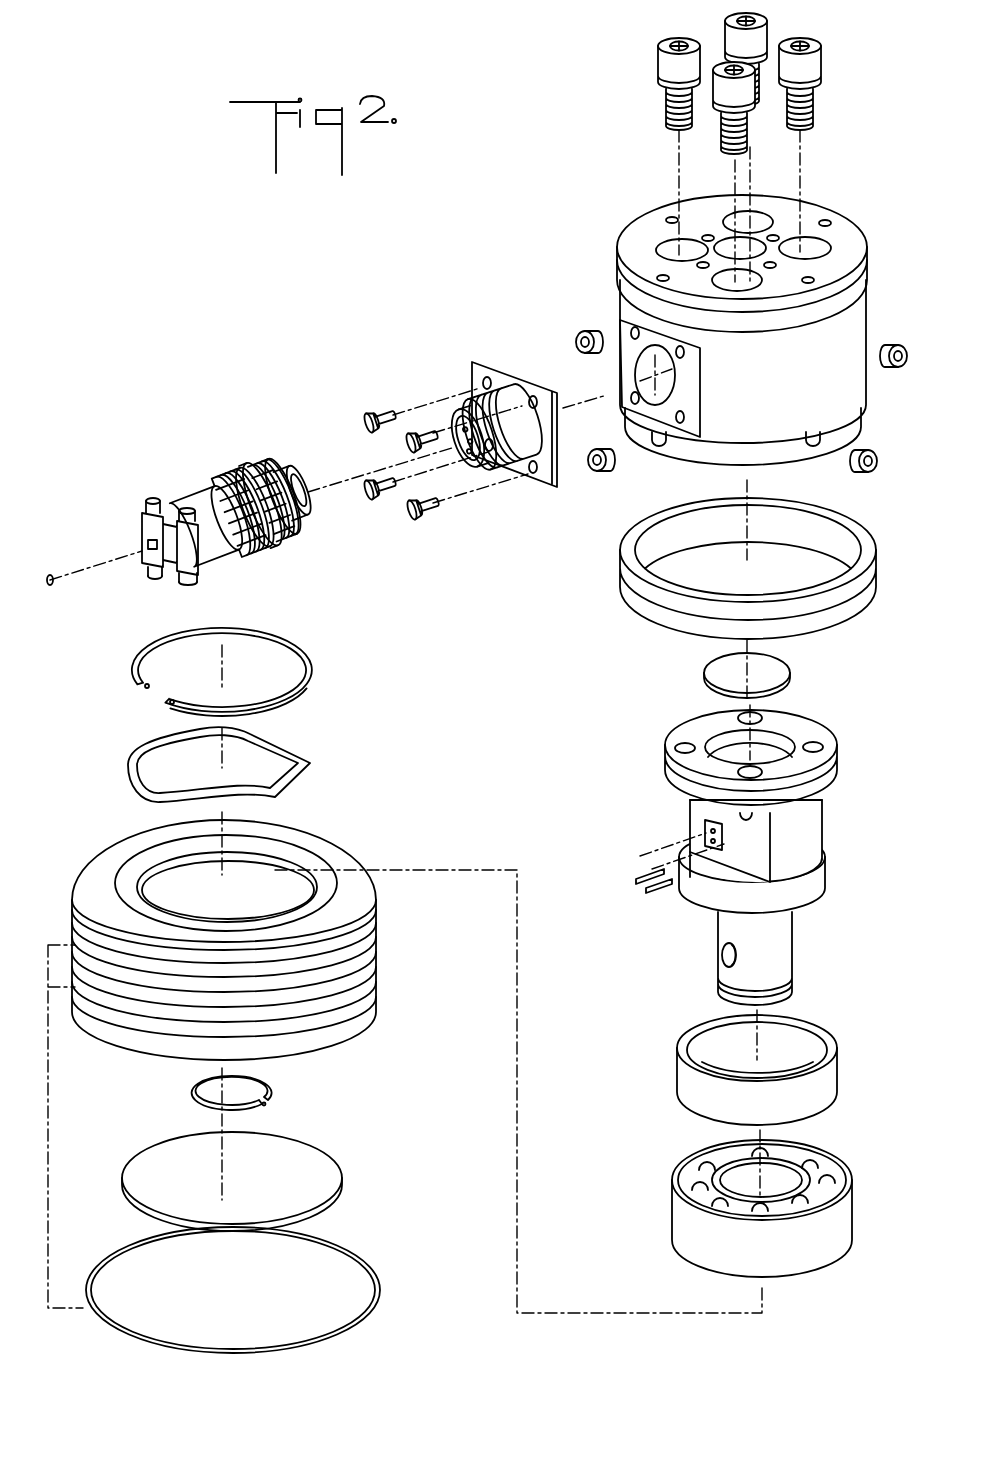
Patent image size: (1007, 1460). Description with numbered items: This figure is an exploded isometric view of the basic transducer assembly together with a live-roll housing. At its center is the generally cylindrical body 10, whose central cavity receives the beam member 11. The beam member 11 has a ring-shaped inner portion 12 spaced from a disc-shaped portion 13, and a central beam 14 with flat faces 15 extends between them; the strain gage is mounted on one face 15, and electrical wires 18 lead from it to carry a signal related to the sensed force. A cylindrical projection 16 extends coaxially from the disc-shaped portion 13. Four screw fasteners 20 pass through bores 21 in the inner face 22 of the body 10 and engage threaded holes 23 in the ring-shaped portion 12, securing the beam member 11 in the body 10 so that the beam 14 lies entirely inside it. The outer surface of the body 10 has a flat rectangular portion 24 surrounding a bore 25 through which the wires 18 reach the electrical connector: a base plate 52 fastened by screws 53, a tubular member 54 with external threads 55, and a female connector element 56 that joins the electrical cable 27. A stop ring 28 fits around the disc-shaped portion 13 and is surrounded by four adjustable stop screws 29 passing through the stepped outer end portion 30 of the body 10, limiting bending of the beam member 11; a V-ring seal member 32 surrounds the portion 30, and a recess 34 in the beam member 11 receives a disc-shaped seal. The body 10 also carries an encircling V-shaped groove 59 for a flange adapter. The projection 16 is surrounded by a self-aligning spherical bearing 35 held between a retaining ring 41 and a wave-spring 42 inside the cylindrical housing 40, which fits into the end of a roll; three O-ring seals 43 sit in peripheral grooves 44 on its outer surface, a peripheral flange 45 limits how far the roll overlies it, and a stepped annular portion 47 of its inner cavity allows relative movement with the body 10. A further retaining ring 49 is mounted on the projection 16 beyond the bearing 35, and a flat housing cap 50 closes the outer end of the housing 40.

The body 10 is at (613, 322).
The beam member 11 is at (828, 833).
The ring-shaped inner portion 12 is at (827, 777).
The disc-shaped portion 13 is at (820, 885).
The central beam 14 is at (803, 810).
The flat faces 15 is at (693, 810).
The cylindrical projection 16 is at (792, 960).
The electrical wires 18 is at (639, 880).
The screw fasteners 20 is at (706, 138).
The bores 21 is at (807, 240).
The inner face 22 is at (628, 228).
The threaded holes 23 is at (813, 742).
The flat rectangular portion 24 is at (694, 405).
The bore 25 is at (636, 370).
The electrical cable 27 is at (97, 557).
The stop ring 28 is at (680, 1068).
The stop screws 29 is at (574, 345).
The outer end portion 30 is at (703, 453).
The resilient seal member 32 is at (632, 596).
The recess 34 is at (725, 747).
The spherical bearing 35 is at (668, 1177).
The housing 40 is at (378, 853).
The retaining ring 41 is at (312, 669).
The wave-spring 42 is at (302, 770).
The O-ring seals 43 is at (378, 1280).
The peripheral grooves 44 is at (377, 942).
The peripheral lip or flange 45 is at (102, 852).
The stepped annular portion 47 is at (287, 860).
The retaining ring 49 is at (273, 1093).
The housing cap 50 is at (345, 1190).
The base plate 52 is at (488, 360).
The screws 53 is at (429, 512).
The tubular member 54 is at (524, 403).
The external threads 55 is at (487, 474).
The female connector element 56 is at (262, 474).
The V-shaped groove 59 is at (612, 286).